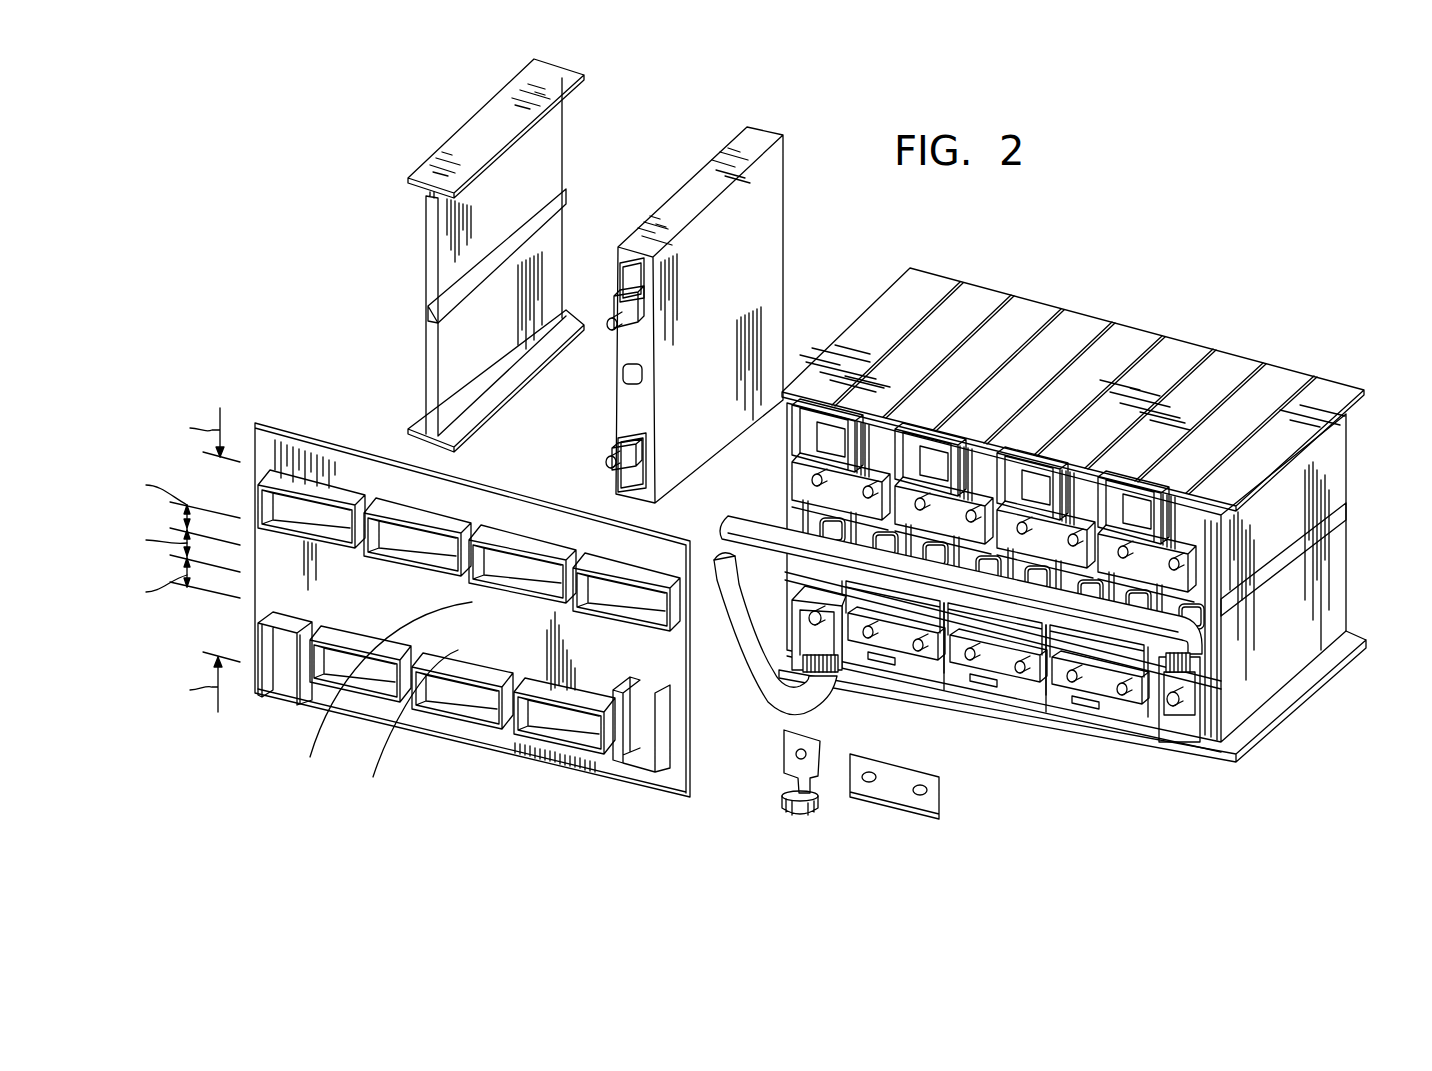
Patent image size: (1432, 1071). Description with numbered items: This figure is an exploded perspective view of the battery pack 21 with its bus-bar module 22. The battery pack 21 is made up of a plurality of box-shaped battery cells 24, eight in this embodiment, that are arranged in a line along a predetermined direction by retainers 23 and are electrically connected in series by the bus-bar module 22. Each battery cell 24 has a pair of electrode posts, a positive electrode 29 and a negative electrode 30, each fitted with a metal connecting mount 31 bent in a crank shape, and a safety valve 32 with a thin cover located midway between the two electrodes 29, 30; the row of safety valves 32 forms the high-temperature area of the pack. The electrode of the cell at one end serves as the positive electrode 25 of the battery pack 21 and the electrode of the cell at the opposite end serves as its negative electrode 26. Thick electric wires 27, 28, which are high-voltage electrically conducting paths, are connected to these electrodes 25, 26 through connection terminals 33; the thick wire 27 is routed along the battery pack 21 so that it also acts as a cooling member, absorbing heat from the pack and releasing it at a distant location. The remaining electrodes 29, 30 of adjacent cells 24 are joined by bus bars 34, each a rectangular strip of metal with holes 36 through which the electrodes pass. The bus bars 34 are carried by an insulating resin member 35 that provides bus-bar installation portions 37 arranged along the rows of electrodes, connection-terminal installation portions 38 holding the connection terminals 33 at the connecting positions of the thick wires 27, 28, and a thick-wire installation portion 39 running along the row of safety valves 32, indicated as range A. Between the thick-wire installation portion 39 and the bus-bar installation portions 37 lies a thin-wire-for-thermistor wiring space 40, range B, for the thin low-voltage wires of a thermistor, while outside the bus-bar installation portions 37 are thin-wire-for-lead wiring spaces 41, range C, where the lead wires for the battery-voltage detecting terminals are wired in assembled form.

The battery pack 21 is at (1306, 352).
The bus-bar module 22 is at (409, 618).
The retainer 23 is at (468, 104).
The battery cell 24 is at (979, 366).
The positive electrode 25 is at (1170, 705).
The negative electrode 26 is at (838, 674).
The thick electric wire 27 is at (760, 531).
The thick electric wire 28 is at (767, 688).
The electrode 29 is at (607, 462).
The electrode 30 is at (611, 326).
The metal connecting mount 31 is at (636, 278).
The safety valve 32 is at (642, 375).
The connection terminal 33 is at (809, 819).
The bus bar 34 is at (891, 790).
The resin member 35 is at (437, 723).
The hole 36 is at (939, 796).
The bus-bar installation portion 37 is at (320, 515).
The connection-terminal installation portion 38 is at (285, 677).
The thick-wire installation portion 39 is at (472, 625).
The thin-wire-for-thermistor wiring space 40 is at (377, 704).
The thin-wire-for-lead wiring space 41 is at (387, 482).